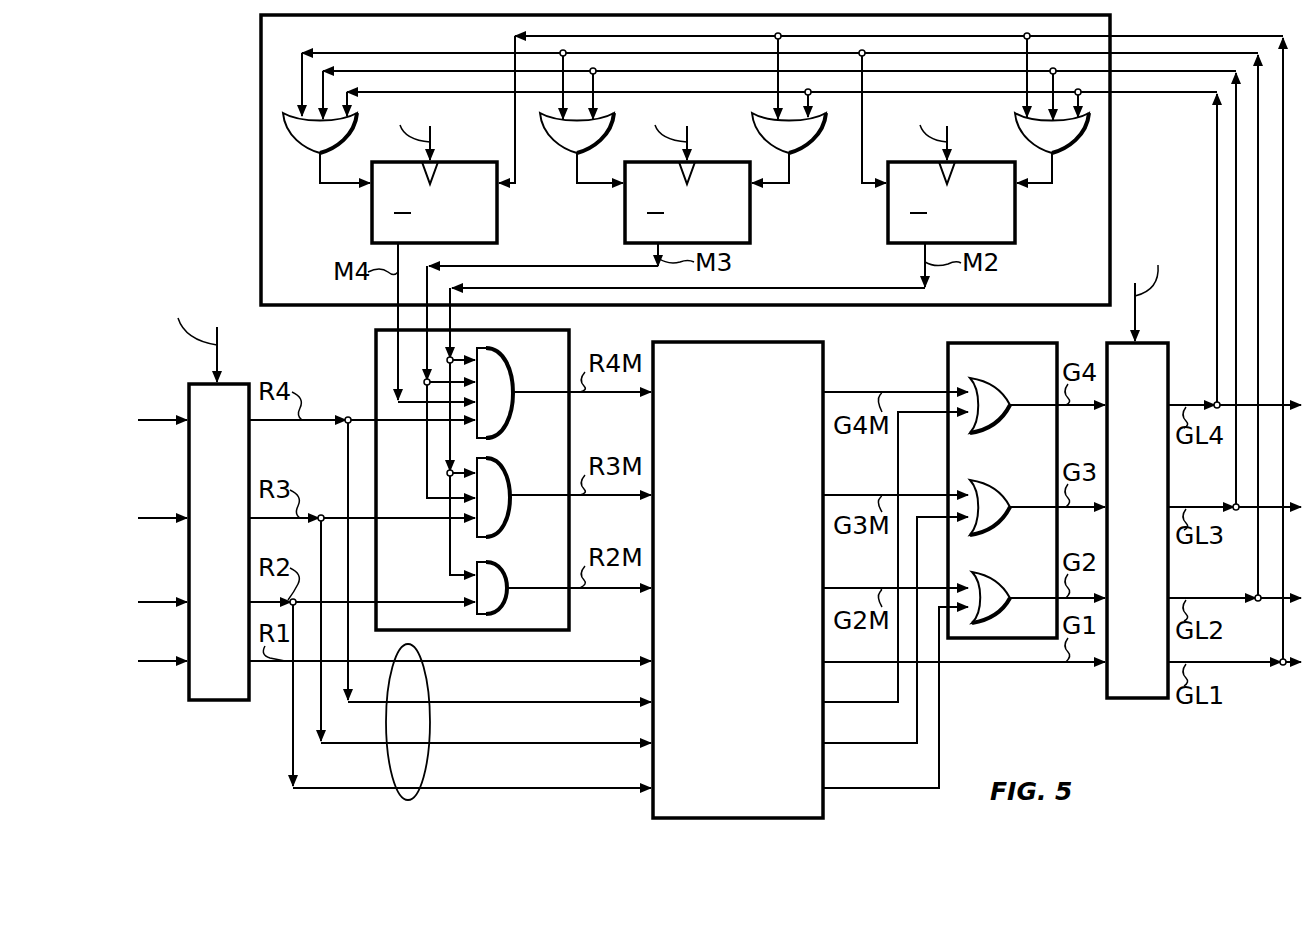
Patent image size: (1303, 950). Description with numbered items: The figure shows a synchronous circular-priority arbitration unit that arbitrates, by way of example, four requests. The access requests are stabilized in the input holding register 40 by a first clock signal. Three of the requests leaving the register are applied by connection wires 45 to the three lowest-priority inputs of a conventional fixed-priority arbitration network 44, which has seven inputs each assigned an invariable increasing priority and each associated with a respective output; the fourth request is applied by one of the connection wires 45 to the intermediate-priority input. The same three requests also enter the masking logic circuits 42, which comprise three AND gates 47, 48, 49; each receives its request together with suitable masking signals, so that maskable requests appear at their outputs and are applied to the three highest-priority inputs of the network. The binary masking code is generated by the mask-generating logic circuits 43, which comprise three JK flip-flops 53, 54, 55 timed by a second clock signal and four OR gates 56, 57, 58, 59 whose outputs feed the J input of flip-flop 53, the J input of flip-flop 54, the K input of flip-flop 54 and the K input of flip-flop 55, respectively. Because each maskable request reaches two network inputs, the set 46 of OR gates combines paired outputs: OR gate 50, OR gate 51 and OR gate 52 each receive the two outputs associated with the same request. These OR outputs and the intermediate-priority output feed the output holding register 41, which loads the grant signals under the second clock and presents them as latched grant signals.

The input holding register 40 is at (213, 700).
The output holding register 41 is at (1140, 698).
The masking logic circuits 42 is at (376, 376).
The mask-generating logic circuits 43 is at (261, 158).
The fixed-priority arbitration network 44 is at (822, 353).
The connection wires 45 is at (412, 800).
The set of OR logic gates 46 is at (960, 343).
The AND gate 47 is at (510, 378).
The AND gate 48 is at (510, 487).
The AND gate 49 is at (505, 580).
The OR gate 50 is at (1000, 382).
The OR gate 51 is at (1000, 484).
The OR gate 52 is at (1003, 576).
The JK flip-flop 53 is at (372, 233).
The JK flip-flop 54 is at (625, 233).
The JK flip-flop 55 is at (888, 231).
The OR gate 56 is at (310, 147).
The OR gate 57 is at (572, 143).
The OR gate 58 is at (806, 141).
The OR gate 59 is at (1064, 138).